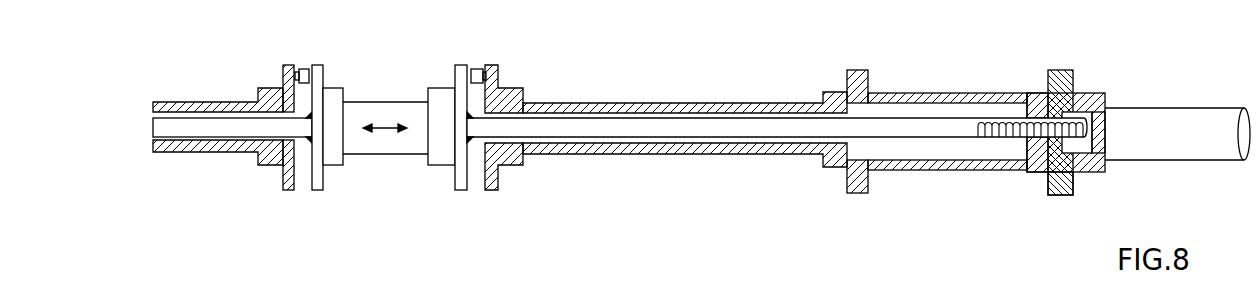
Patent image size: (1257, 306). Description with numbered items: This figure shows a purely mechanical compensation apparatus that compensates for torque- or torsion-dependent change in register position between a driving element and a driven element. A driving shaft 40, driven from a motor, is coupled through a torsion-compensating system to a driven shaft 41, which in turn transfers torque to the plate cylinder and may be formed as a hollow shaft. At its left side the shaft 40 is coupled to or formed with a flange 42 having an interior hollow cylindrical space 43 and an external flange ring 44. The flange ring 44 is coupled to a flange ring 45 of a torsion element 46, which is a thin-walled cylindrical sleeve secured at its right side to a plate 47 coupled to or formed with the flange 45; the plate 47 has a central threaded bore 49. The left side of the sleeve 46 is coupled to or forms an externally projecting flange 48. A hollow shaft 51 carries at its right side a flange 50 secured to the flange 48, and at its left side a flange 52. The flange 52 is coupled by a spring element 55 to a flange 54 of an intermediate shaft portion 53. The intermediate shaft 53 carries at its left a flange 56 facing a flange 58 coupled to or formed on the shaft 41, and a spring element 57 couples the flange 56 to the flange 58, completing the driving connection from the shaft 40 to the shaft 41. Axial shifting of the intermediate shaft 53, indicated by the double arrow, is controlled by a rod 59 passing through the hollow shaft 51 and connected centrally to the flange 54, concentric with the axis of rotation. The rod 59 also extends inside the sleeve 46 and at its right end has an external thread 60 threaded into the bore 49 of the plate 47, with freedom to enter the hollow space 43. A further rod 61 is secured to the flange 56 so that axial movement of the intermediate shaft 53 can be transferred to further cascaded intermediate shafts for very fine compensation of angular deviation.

The shaft 40 is at (1202, 145).
The shaft 41 is at (237, 143).
The flange 42 is at (1088, 93).
The interior hollow cylindrical space 43 is at (1092, 172).
The external flange ring 44 is at (1065, 70).
The flange ring 45 is at (1055, 197).
The torsion element 46 is at (890, 170).
The plate 47 is at (1040, 158).
The externally projecting flange 48 is at (862, 68).
The central threaded bore 49 is at (1038, 108).
The flange 50 is at (850, 193).
The hollow shaft 51 is at (605, 105).
The flange 52 is at (490, 192).
The intermediate shaft portion 53 is at (383, 143).
The flange 54 is at (458, 192).
The spring element 55 is at (480, 68).
The flange 56 is at (318, 65).
The spring element 57 is at (302, 67).
The flange 58 is at (287, 192).
The rod 59 is at (693, 128).
The external thread 60 is at (987, 142).
The rod 61 is at (187, 125).